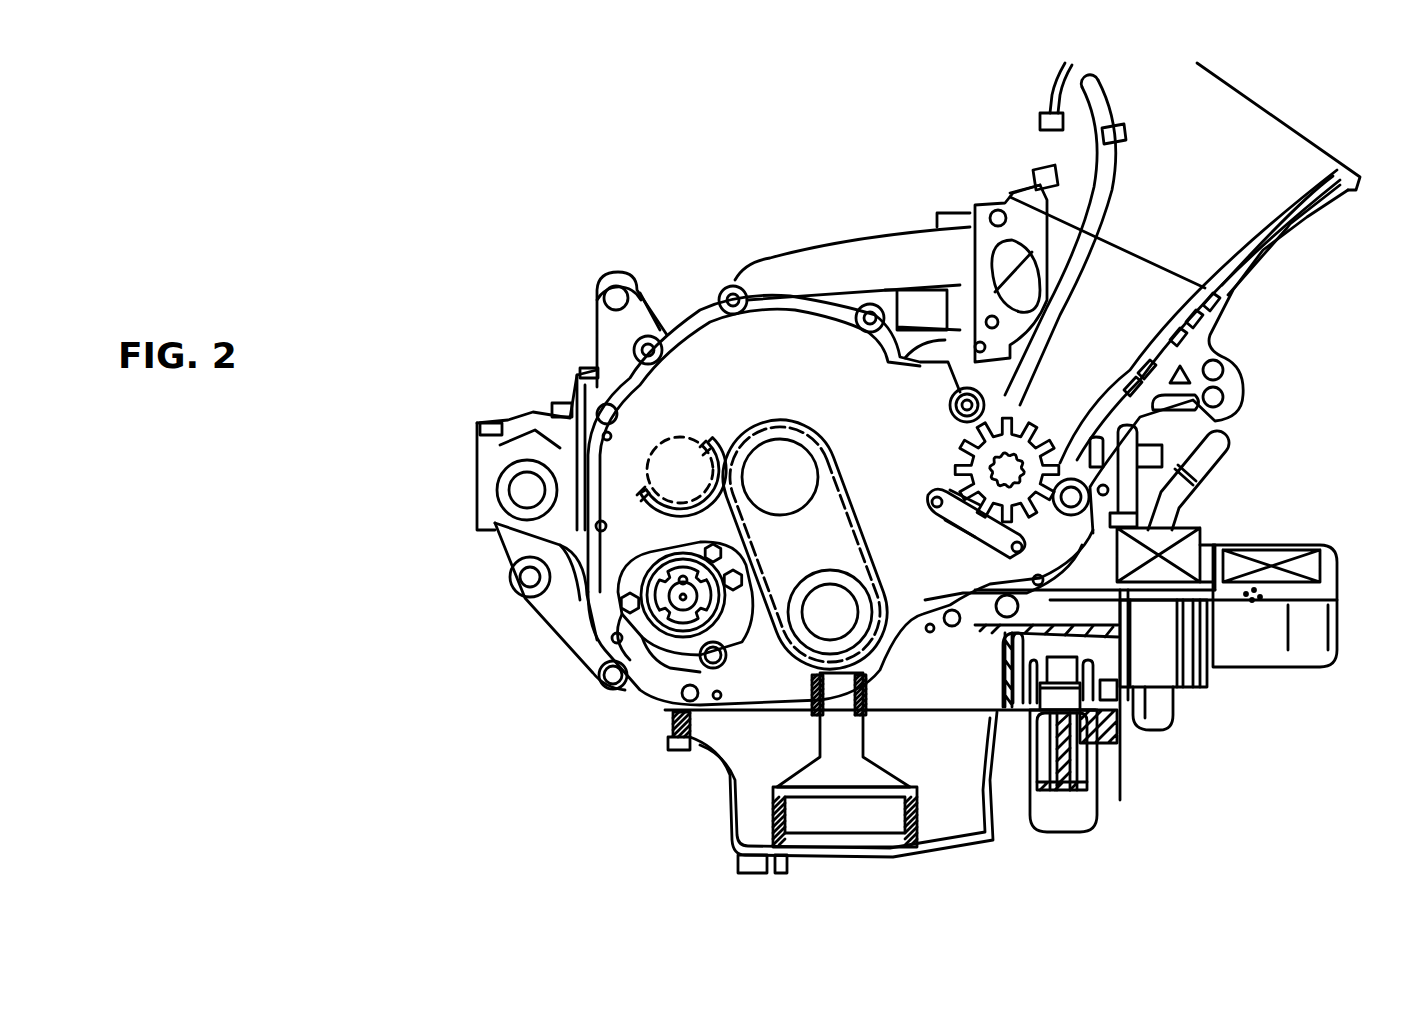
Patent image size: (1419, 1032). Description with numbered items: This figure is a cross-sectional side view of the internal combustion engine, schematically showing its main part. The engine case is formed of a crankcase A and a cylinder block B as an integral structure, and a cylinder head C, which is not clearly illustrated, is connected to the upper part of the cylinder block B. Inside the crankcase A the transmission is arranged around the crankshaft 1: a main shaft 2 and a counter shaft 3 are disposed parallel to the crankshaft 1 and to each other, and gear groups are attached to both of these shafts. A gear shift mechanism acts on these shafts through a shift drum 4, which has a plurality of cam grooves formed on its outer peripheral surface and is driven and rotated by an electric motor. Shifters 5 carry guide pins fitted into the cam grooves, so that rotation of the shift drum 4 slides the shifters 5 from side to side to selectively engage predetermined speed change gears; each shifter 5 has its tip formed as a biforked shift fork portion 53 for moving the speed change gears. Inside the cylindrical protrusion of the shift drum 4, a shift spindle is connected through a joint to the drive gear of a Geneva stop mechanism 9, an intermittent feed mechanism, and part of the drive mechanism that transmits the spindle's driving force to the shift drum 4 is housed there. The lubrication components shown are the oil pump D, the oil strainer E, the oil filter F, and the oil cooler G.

The crankshaft 1 is at (947, 450).
The main shaft 2 is at (793, 452).
The counter shaft 3 is at (677, 452).
The shift drum 4 is at (675, 622).
The shifter 5 is at (703, 548).
The Geneva stop mechanism 9 is at (604, 714).
The shift fork portion 53 is at (646, 510).
The crankcase A is at (597, 590).
The cylinder block B is at (975, 222).
The cylinder head C is at (1038, 82).
The oil pump D is at (857, 592).
The oil strainer E is at (826, 808).
The oil filter F is at (1265, 650).
The oil cooler G is at (1184, 700).